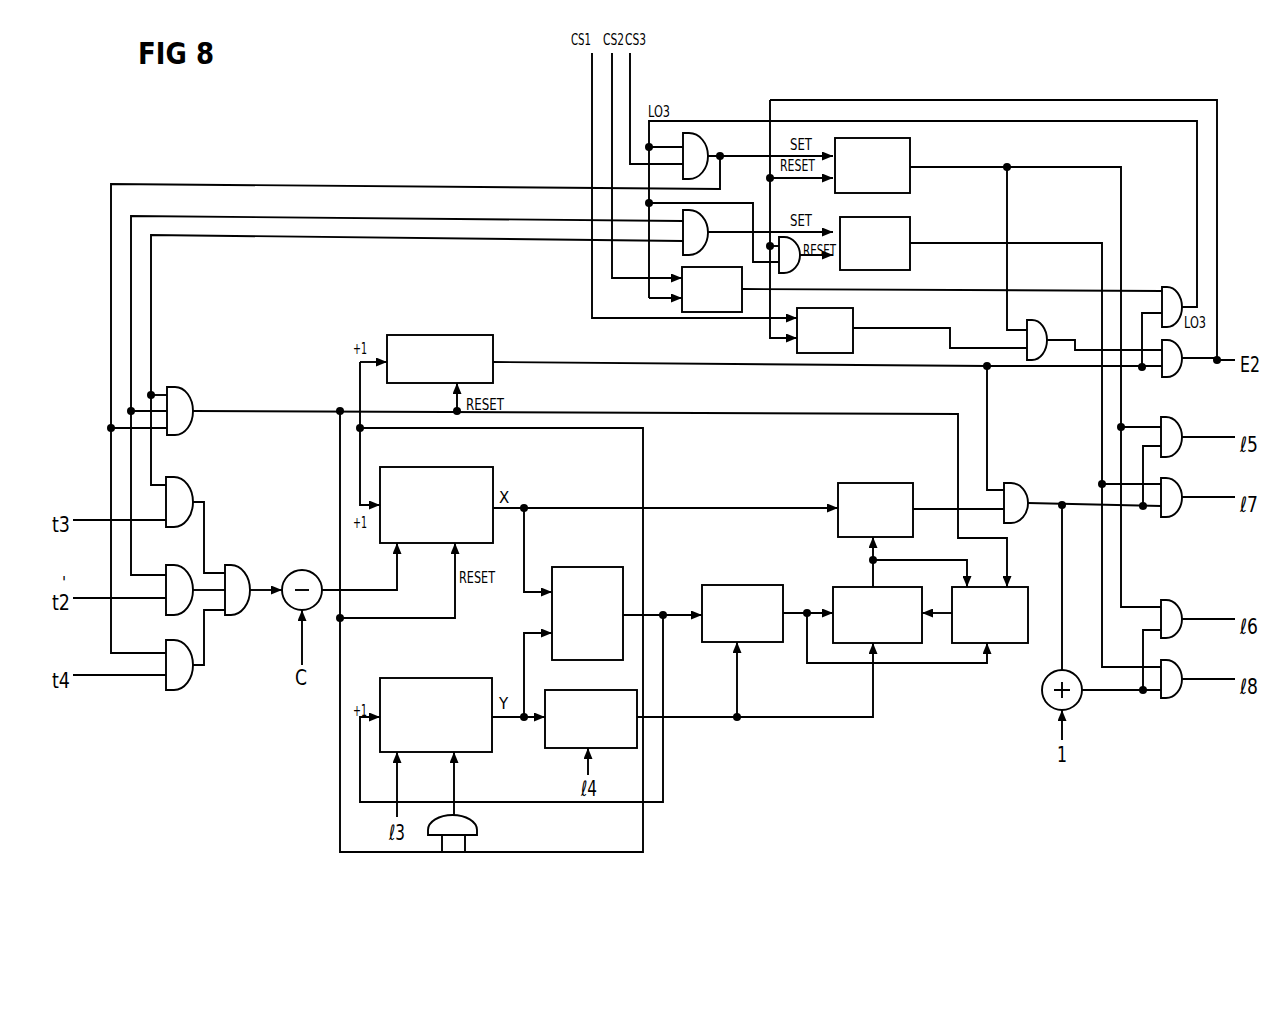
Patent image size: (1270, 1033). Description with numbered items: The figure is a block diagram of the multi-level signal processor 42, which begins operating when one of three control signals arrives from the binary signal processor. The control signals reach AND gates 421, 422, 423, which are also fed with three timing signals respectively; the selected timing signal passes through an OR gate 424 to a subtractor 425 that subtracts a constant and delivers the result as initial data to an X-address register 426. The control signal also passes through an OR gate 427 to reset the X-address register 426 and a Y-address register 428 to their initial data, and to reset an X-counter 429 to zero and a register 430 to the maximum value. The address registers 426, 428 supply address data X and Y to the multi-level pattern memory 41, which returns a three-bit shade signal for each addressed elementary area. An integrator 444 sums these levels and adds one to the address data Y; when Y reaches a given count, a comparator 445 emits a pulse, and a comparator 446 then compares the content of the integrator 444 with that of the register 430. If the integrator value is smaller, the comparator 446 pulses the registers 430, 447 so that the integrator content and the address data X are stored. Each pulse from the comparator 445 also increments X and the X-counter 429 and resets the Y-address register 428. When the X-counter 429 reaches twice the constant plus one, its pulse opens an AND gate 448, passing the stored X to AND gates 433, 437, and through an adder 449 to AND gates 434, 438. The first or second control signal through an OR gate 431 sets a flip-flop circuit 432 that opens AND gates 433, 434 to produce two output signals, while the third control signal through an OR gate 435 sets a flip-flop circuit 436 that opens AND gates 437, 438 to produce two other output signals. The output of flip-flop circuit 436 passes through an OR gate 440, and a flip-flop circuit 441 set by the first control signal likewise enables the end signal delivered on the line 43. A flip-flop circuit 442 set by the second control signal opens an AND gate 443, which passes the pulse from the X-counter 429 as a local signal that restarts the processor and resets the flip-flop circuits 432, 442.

The multi-level signal processor 42 is at (414, 109).
The multi-level pattern memory 41 is at (593, 567).
The line 43 is at (1186, 369).
The AND gate 421 is at (181, 481).
The AND gate 422 is at (179, 562).
The AND gate 423 is at (166, 645).
The OR gate 424 is at (233, 567).
The subtractor 425 is at (302, 570).
The X-address register 426 is at (445, 467).
The OR gate 427 is at (175, 387).
The Y-address register 428 is at (457, 678).
The X-counter 429 is at (457, 335).
The register 430 is at (1030, 586).
The OR gate 431 is at (708, 238).
The flip-flop circuit 432 is at (907, 232).
The AND gate 433 is at (1180, 490).
The AND gate 434 is at (1175, 673).
The OR gate 435 is at (710, 154).
The flip-flop circuit 436 is at (907, 156).
The AND gate 437 is at (1180, 430).
The AND gate 438 is at (1172, 600).
The OR gate 440 is at (1045, 333).
The flip-flop circuit 441 is at (853, 318).
The flip-flop circuit 442 is at (725, 266).
The AND gate 443 is at (1170, 287).
The integrator 444 is at (752, 585).
The comparator 445 is at (574, 688).
The comparator 446 is at (879, 590).
The register 447 is at (898, 483).
The AND gate 448 is at (1013, 483).
The adder 449 is at (1068, 672).